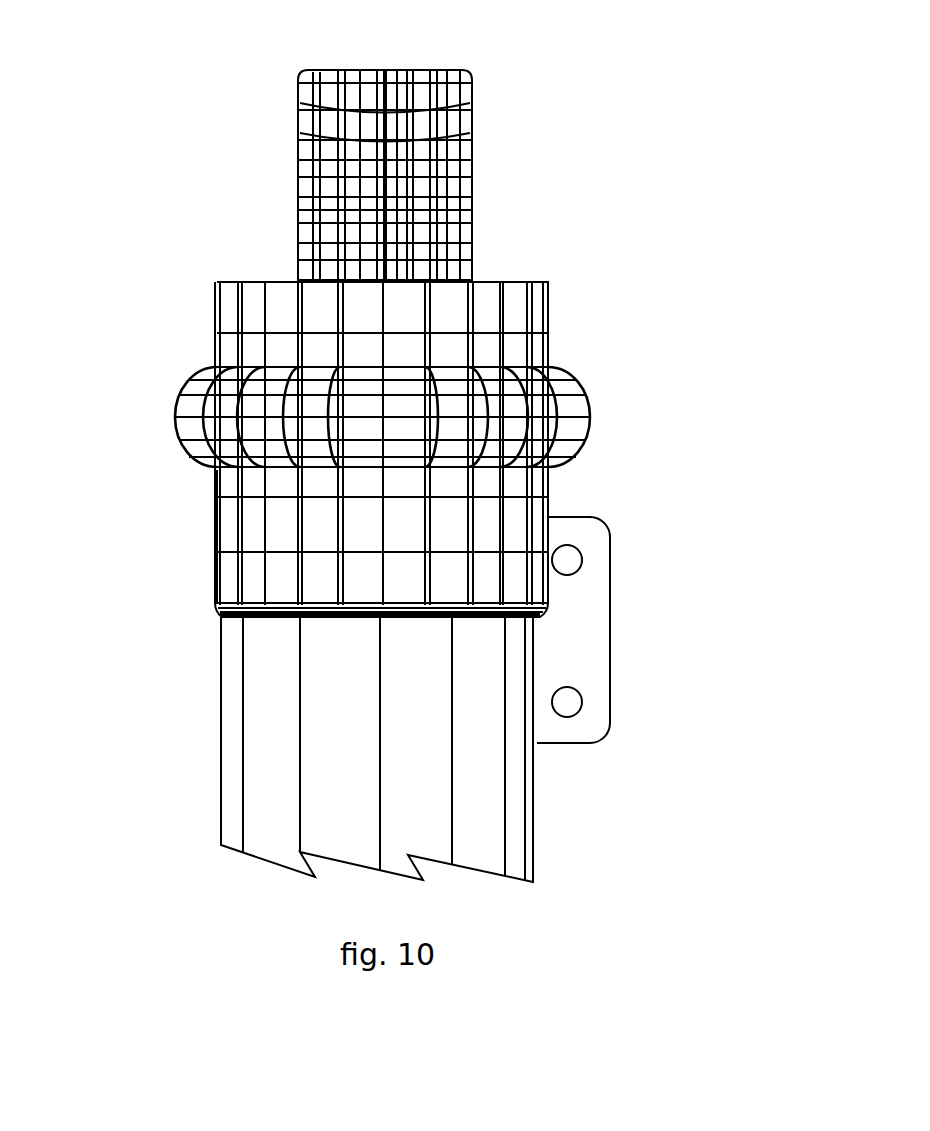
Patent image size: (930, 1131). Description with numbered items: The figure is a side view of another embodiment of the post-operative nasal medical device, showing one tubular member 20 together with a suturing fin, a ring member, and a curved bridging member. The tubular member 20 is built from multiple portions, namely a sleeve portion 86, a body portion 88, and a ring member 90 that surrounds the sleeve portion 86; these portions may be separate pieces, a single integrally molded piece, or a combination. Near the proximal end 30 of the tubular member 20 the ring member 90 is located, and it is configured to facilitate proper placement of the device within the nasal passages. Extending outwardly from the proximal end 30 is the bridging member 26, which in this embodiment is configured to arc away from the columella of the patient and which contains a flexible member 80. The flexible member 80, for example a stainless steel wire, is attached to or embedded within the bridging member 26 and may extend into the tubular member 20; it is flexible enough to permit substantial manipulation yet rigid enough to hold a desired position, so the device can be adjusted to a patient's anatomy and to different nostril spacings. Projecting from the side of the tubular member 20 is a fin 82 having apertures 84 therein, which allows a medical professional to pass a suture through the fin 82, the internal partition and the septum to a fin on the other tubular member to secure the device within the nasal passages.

The tubular member 20 is at (192, 607).
The bridging member 26 is at (435, 70).
The proximal end 30 is at (237, 267).
The flexible member 80 is at (387, 95).
The fin 82 is at (582, 626).
The aperture 84 is at (572, 560).
The sleeve portion 86 is at (215, 532).
The body portion 88 is at (222, 737).
The ring member 90 is at (173, 417).